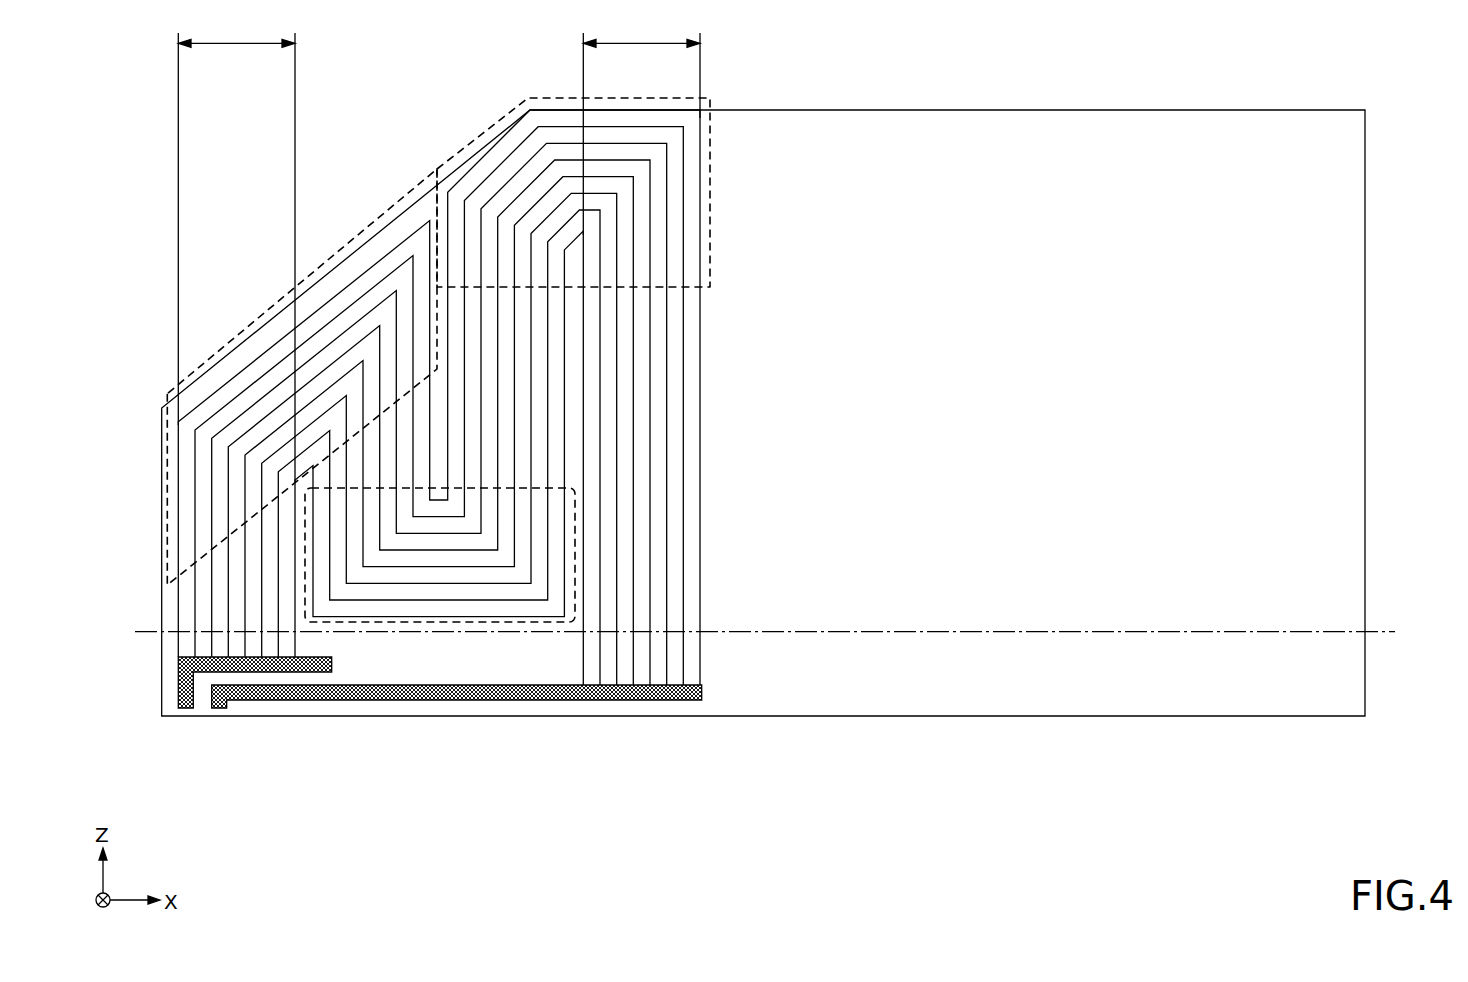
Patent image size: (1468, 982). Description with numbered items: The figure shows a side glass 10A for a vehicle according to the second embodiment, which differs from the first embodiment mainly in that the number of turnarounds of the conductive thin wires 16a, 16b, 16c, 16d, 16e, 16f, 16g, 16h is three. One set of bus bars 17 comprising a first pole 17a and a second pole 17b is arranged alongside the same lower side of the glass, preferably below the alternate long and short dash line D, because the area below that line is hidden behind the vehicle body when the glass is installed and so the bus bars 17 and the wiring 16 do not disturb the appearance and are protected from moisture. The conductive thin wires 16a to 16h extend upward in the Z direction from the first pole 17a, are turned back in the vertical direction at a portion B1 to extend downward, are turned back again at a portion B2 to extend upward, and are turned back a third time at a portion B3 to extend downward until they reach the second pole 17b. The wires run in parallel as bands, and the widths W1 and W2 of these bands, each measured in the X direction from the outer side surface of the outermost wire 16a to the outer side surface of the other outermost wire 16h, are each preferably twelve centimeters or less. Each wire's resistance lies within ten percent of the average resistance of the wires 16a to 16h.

The side glass 10A is at (125, 155).
The wiring 16 is at (410, 480).
The conductive thin wire 16a is at (178, 643).
The conductive thin wire 16b is at (195, 643).
The conductive thin wire 16c is at (212, 643).
The conductive thin wire 16d is at (228, 643).
The conductive thin wire 16e is at (245, 643).
The conductive thin wire 16f is at (262, 643).
The conductive thin wire 16g is at (278, 643).
The conductive thin wire 16h is at (436, 519).
The bus bar 17 is at (439, 753).
The first pole 17a is at (313, 672).
The second pole 17b is at (425, 700).
The portion B1 is at (367, 234).
The portion B2 is at (440, 628).
The portion B3 is at (487, 128).
The alternate long and short dash line D is at (950, 637).
The width of the band W1 is at (236, 250).
The width of the band W2 is at (641, 126).